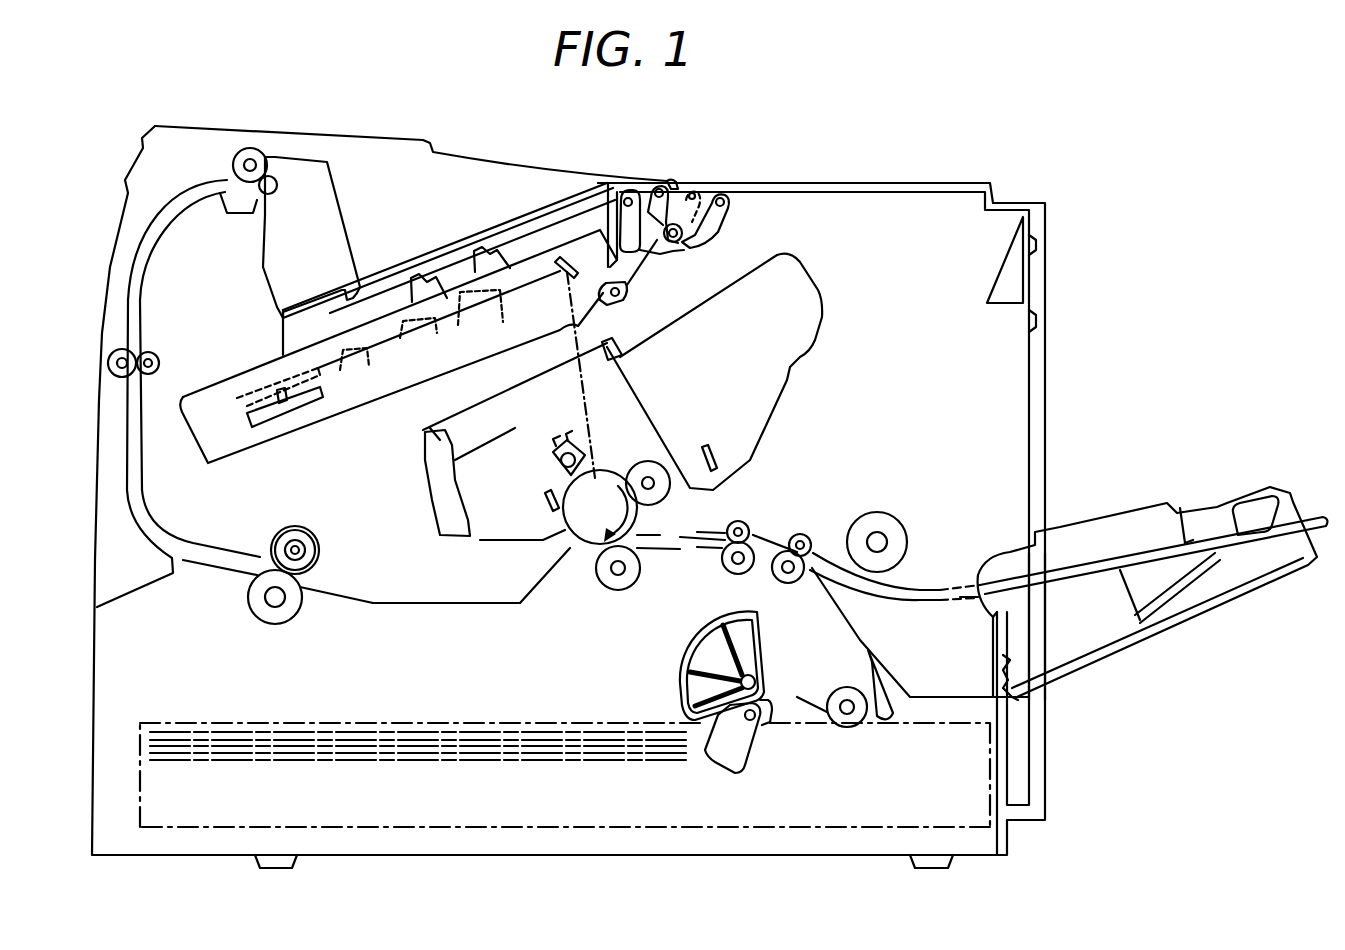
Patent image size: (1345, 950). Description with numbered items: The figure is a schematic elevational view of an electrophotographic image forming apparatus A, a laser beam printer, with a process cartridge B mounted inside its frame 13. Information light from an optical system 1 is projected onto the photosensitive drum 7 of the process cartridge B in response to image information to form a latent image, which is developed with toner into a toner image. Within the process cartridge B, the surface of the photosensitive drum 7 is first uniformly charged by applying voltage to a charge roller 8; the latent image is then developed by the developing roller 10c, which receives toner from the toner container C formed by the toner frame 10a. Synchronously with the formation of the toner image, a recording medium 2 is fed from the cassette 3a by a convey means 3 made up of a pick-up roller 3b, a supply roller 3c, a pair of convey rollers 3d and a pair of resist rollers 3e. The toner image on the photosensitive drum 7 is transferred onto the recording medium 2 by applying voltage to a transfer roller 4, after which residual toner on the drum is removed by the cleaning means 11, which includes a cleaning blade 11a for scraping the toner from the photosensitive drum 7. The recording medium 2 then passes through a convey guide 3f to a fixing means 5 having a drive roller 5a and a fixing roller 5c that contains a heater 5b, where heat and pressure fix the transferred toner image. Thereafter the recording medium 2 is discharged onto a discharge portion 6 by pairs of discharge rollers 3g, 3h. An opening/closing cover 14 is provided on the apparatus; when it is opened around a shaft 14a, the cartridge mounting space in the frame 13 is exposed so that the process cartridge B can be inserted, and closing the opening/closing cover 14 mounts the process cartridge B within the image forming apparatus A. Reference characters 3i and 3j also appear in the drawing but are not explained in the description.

The optical system 1 is at (297, 420).
The recording medium 2 is at (408, 733).
The convey means 3 is at (668, 574).
The cassette 3a is at (785, 832).
The pick-up roller 3b is at (686, 682).
The supply roller 3c is at (843, 690).
The pair of convey rollers 3d is at (792, 583).
The pair of resist rollers 3e is at (727, 570).
The convey guide 3f is at (368, 608).
The pair of discharge rollers 3g is at (146, 353).
The pair of discharge rollers 3h is at (253, 148).
The sheet discharge tray 3i is at (1124, 510).
The fixing roller 3j is at (883, 514).
The transfer roller 4 is at (603, 588).
The fixing means 5 is at (303, 602).
The drive roller 5a is at (266, 618).
The heater 5b is at (306, 550).
The fixing roller 5c is at (316, 532).
The discharge portion 6 is at (441, 250).
The photosensitive drum 7 is at (575, 538).
The charge roller 8 is at (570, 445).
The toner frame 10a is at (790, 372).
The developing roller 10c is at (640, 472).
The cleaning means 11 is at (551, 480).
The cleaning blade 11a is at (545, 502).
The frame 13 is at (605, 858).
The opening/closing cover 14 is at (866, 180).
The shaft 14a is at (673, 220).
The electrophotographic image forming apparatus A is at (950, 175).
The process cartridge B is at (810, 266).
The toner container C is at (795, 326).